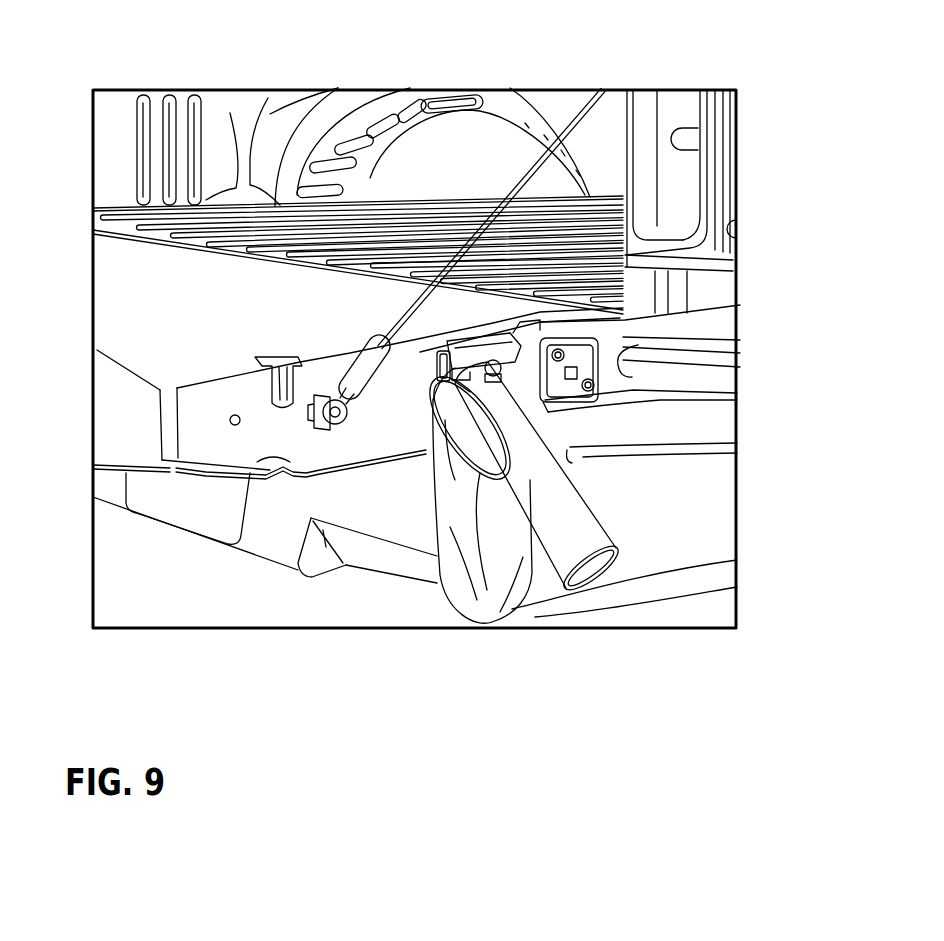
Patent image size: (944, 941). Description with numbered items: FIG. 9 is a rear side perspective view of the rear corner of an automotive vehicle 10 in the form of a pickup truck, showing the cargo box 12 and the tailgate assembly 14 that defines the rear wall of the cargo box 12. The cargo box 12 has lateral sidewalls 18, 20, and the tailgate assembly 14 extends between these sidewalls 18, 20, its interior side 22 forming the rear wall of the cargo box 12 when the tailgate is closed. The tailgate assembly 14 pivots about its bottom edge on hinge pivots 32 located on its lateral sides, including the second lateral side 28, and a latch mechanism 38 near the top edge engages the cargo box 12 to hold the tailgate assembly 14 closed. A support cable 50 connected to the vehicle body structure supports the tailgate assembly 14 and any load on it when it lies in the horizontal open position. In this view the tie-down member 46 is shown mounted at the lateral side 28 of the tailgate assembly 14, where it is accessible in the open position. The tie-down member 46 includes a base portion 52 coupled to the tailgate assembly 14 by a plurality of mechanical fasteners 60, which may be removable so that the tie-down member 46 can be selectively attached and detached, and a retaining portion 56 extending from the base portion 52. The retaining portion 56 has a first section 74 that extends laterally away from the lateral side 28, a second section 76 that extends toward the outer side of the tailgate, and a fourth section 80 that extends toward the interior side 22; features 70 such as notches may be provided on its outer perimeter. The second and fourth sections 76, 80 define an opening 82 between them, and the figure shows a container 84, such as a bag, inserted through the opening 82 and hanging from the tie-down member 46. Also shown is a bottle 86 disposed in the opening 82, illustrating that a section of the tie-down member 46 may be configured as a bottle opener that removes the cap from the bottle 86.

The automotive vehicle 10 is at (422, 82).
The cargo box 12 is at (400, 186).
The tailgate assembly 14 is at (121, 417).
The lateral sidewall 18 is at (740, 232).
The lateral sidewall 20 is at (228, 118).
The interior side 22 is at (143, 320).
The second lateral side 28 is at (213, 447).
The hinge pivot 32 is at (625, 368).
The latch mechanism 38 is at (280, 412).
The tie-down member 46 is at (522, 332).
The support cable 50 is at (578, 118).
The base portion 52 is at (432, 364).
The retaining portion 56 is at (443, 380).
The mechanical fastener 60 is at (665, 322).
The features 70 is at (505, 352).
The first section 74 is at (456, 345).
The second section 76 is at (520, 372).
The fourth section 80 is at (500, 355).
The opening 82 is at (550, 338).
The container 84 is at (497, 612).
The bottle 86 is at (578, 542).